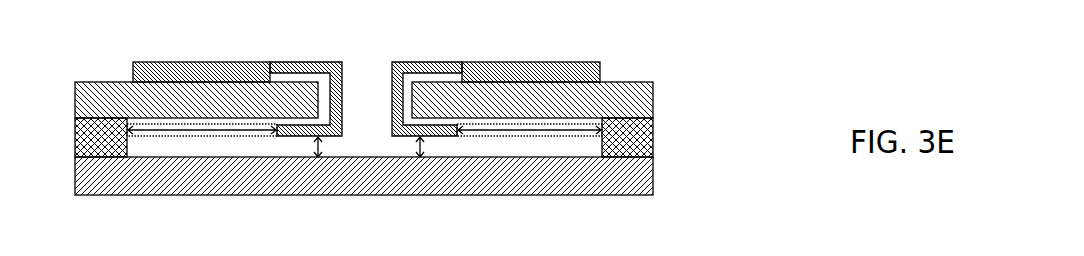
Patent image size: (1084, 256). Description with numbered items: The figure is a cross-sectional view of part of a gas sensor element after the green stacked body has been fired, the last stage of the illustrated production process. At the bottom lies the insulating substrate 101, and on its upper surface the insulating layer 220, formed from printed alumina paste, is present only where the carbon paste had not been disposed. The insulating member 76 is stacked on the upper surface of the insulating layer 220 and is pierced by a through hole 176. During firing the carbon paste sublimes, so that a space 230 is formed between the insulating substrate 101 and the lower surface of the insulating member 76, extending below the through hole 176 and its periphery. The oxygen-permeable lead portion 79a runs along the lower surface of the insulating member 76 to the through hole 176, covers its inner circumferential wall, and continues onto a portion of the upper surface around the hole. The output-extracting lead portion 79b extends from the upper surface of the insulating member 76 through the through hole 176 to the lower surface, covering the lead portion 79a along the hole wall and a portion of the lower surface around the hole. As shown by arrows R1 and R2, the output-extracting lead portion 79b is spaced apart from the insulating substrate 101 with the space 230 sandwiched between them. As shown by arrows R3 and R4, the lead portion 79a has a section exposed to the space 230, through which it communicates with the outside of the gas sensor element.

The insulating member 76 is at (655, 103).
The lead portion 79a is at (107, 83).
The output-extracting lead portion 79b is at (227, 62).
The insulating substrate 101 is at (655, 188).
The through hole 176 is at (399, 86).
The insulating layer 220 is at (655, 140).
The space 230 is at (370, 153).
The arrow R1 is at (318, 138).
The arrow R2 is at (423, 140).
The arrow R3 is at (207, 131).
The arrow R4 is at (535, 133).